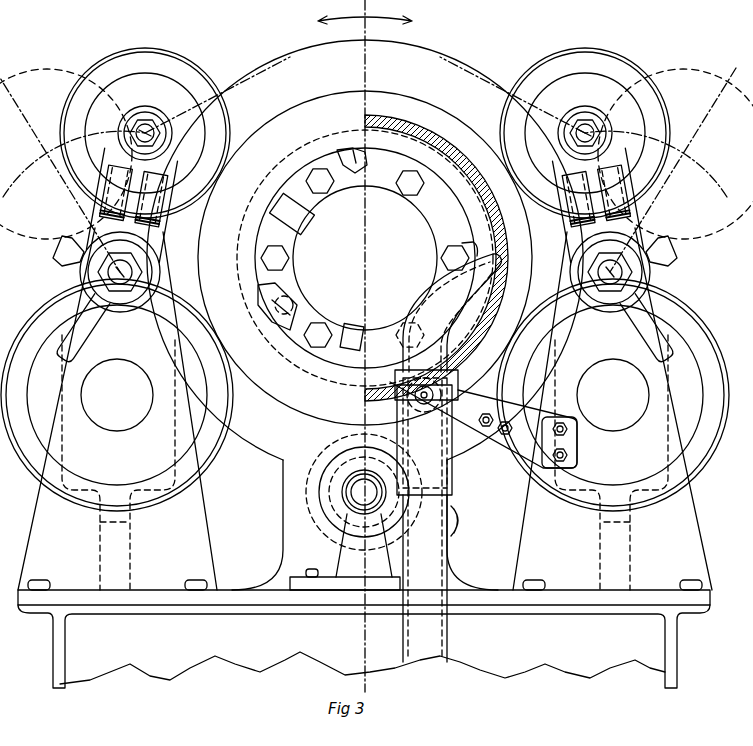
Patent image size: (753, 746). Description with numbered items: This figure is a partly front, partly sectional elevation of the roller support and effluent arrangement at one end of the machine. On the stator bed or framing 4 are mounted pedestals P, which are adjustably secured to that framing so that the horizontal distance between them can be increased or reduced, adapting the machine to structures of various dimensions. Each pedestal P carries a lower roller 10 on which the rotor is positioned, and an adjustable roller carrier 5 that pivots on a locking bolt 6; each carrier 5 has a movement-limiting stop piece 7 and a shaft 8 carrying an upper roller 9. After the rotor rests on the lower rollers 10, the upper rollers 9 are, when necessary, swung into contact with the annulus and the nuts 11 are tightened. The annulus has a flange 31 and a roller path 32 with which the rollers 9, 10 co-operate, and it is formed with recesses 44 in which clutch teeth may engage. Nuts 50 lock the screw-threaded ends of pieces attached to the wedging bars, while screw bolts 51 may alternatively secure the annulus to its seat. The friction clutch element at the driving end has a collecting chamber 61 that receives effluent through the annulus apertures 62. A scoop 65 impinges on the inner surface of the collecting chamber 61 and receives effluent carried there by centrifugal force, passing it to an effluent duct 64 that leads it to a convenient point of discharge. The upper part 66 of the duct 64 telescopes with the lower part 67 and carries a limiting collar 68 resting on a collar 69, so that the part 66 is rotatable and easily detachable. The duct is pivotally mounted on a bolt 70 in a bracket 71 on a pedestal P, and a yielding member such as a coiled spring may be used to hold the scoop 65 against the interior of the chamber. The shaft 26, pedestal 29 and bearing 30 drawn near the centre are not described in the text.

The stator bed or framing 4 is at (364, 639).
The adjustable roller carrier 5 is at (160, 240).
The locking bolt 6 is at (140, 273).
The movement-limiting stop piece 7 is at (56, 253).
The shaft 8 is at (159, 124).
The upper roller 9 is at (177, 57).
The lower roller 10 is at (218, 460).
The nut 11 is at (96, 282).
The shaft 26 is at (364, 492).
The pedestal 29 is at (345, 552).
The bearing 30 is at (320, 518).
The flange 31 is at (450, 55).
The roller path 32 is at (441, 106).
The recess 44 is at (296, 224).
The nut 50 is at (424, 183).
The screw bolt 51 is at (289, 259).
The collecting chamber 61 is at (381, 258).
The annuli aperture 62 is at (361, 150).
The effluent duct 64 is at (425, 521).
The scoop 65 is at (462, 250).
The upper part of duct 66 is at (452, 313).
The lower part of duct 67 is at (453, 505).
The limiting collar 68 is at (397, 372).
The collar 69 is at (397, 408).
The bolt 70 is at (420, 411).
The bracket 71 is at (483, 425).
The pedestal P is at (365, 409).